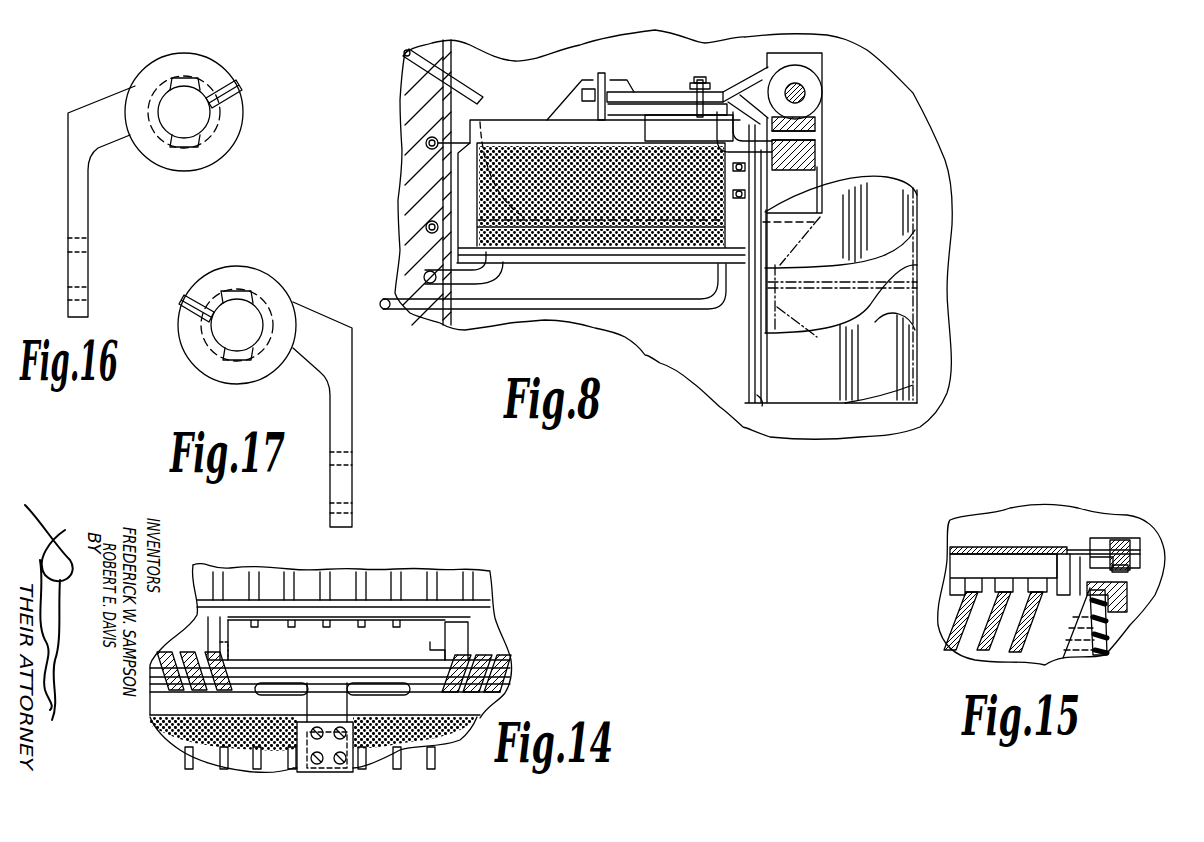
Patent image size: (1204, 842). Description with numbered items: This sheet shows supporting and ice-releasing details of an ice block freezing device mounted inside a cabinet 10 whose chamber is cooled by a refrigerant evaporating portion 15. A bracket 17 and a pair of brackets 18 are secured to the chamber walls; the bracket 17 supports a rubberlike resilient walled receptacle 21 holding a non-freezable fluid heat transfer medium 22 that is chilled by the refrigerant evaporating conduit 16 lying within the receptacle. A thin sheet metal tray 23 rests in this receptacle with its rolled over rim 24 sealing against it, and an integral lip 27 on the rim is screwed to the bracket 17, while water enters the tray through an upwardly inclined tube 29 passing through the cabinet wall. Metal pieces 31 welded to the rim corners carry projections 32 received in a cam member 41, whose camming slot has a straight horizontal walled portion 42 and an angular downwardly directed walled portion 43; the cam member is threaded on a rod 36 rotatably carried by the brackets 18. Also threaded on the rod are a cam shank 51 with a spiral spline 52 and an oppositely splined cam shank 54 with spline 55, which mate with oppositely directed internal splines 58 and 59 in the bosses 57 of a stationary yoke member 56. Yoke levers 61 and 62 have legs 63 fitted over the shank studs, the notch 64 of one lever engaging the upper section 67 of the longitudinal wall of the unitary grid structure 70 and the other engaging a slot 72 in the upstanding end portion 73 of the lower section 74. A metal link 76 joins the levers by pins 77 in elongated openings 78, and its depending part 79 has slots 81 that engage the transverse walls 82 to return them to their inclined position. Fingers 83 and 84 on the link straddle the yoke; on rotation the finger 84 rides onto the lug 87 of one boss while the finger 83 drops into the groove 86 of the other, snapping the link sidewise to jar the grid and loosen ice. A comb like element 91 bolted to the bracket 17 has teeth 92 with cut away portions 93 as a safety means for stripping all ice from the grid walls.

In FIG. 8, the cabinet 10 is at (407, 96).
In FIG. 14, the cabinet 10 is at (500, 640).
In FIG. 15, the cabinet 10 is at (1150, 598).
In FIG. 8, the refrigerant evaporating portion 15 is at (425, 227).
In FIG. 8, the refrigerant evaporating conduit 16 is at (645, 306).
In FIG. 8, the bracket 17 is at (748, 378).
In FIG. 8, the bracket 18 is at (826, 62).
In FIG. 8, the resilient walled receptacle 21 is at (534, 250).
In FIG. 14, the resilient walled receptacle 21 is at (418, 742).
In FIG. 15, the resilient walled receptacle 21 is at (1103, 628).
In FIG. 15, the fluid heat transfer medium 22 is at (1082, 648).
In FIG. 8, the tray 23 is at (592, 195).
In FIG. 15, the tray 23 is at (1063, 642).
In FIG. 8, the rim 24 is at (525, 120).
In FIG. 14, the rim 24 is at (488, 702).
In FIG. 15, the rim 24 is at (1118, 608).
In FIG. 8, the lip 27 is at (426, 148).
In FIG. 8, the inclined tube 29 is at (470, 84).
In FIG. 8, the metal piece 31 is at (646, 129).
In FIG. 15, the metal piece 31 is at (1127, 592).
In FIG. 8, the projection 32 is at (778, 150).
In FIG. 8, the rod 36 is at (806, 90).
In FIG. 8, the cam member 41 is at (820, 98).
In FIG. 8, the straight horizontal walled portion 42 is at (812, 133).
In FIG. 8, the angular downwardly directed walled portion 43 is at (810, 150).
In FIG. 14, the cam shank 51 is at (160, 652).
In FIG. 14, the spiral spline 52 is at (195, 688).
In FIG. 14, the cam shank 54 is at (505, 665).
In FIG. 14, the spiral spline 55 is at (460, 690).
In FIG. 16, the yoke member 56 is at (97, 150).
In FIG. 17, the yoke member 56 is at (346, 372).
In FIG. 14, the yoke member 56 is at (372, 655).
In FIG. 16, the boss 57 is at (210, 63).
In FIG. 17, the boss 57 is at (265, 285).
In FIG. 14, the boss 57 is at (258, 690).
In FIG. 16, the internal spline 58 is at (192, 145).
In FIG. 17, the internal spline 59 is at (238, 360).
In FIG. 8, the yoke lever 61 is at (645, 92).
In FIG. 15, the yoke lever 62 is at (1140, 548).
In FIG. 8, the legs 63 is at (775, 68).
In FIG. 8, the notch 64 is at (603, 86).
In FIG. 8, the upper section 67 is at (584, 82).
In FIG. 15, the upper section 67 is at (1064, 590).
In FIG. 8, the unitary grid structure 70 is at (615, 85).
In FIG. 14, the unitary grid structure 70 is at (466, 561).
In FIG. 15, the unitary grid structure 70 is at (952, 622).
In FIG. 15, the slot 72 is at (1098, 557).
In FIG. 15, the upstanding end portion 73 is at (1107, 555).
In FIG. 15, the lower section 74 is at (967, 638).
In FIG. 8, the metal link 76 is at (697, 84).
In FIG. 14, the metal link 76 is at (312, 620).
In FIG. 15, the metal link 76 is at (1010, 548).
In FIG. 8, the pin 77 is at (705, 78).
In FIG. 15, the pin 77 is at (1112, 552).
In FIG. 15, the elongated opening 78 is at (1082, 552).
In FIG. 8, the depending part 79 is at (650, 106).
In FIG. 15, the depending part 79 is at (957, 563).
In FIG. 15, the slot 81 is at (1028, 553).
In FIG. 8, the transverse walls 82 is at (572, 118).
In FIG. 14, the transverse walls 82 is at (392, 582).
In FIG. 15, the transverse walls 82 is at (990, 640).
In FIG. 14, the finger 83 is at (215, 630).
In FIG. 14, the finger 84 is at (465, 628).
In FIG. 16, the groove 86 is at (242, 84).
In FIG. 14, the groove 86 is at (245, 658).
In FIG. 17, the lug 87 is at (186, 297).
In FIG. 14, the lug 87 is at (436, 648).
In FIG. 8, the comb like element 91 is at (762, 400).
In FIG. 14, the comb like element 91 is at (250, 777).
In FIG. 8, the teeth 92 is at (906, 186).
In FIG. 8, the cut away 93 is at (917, 266).